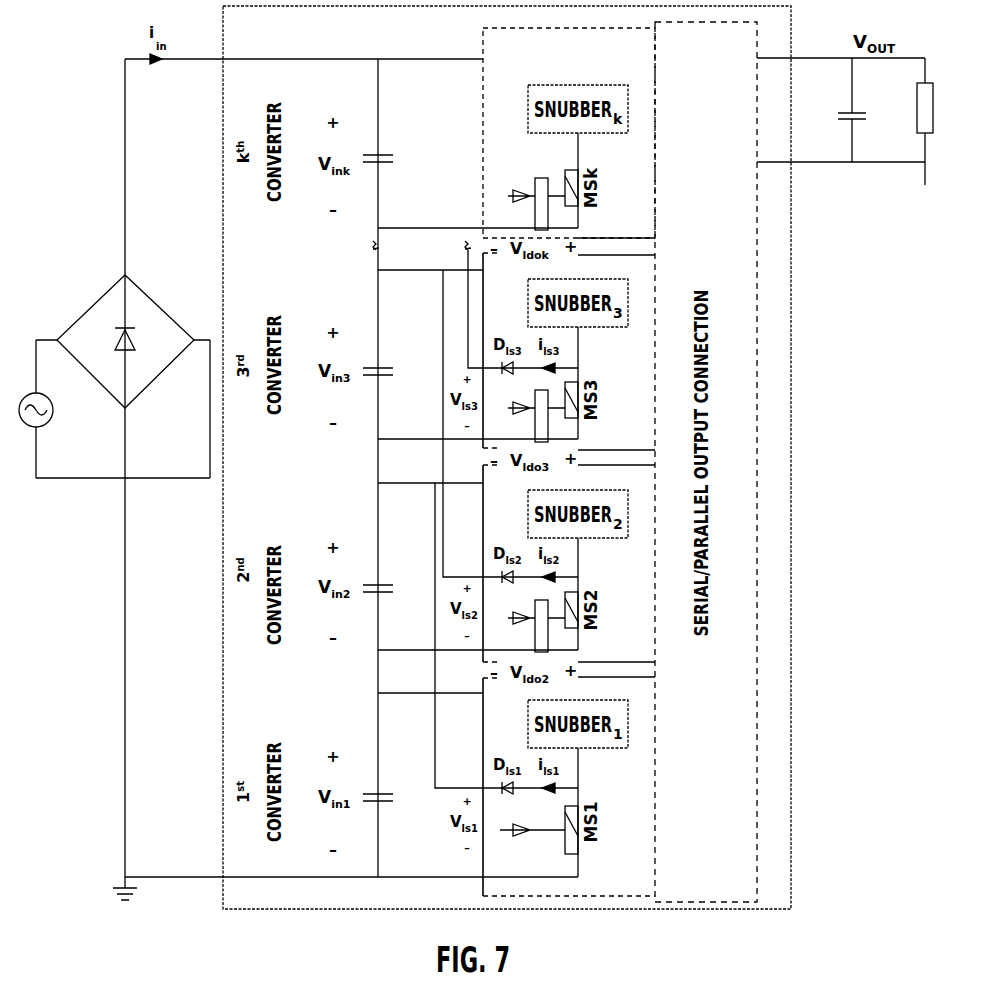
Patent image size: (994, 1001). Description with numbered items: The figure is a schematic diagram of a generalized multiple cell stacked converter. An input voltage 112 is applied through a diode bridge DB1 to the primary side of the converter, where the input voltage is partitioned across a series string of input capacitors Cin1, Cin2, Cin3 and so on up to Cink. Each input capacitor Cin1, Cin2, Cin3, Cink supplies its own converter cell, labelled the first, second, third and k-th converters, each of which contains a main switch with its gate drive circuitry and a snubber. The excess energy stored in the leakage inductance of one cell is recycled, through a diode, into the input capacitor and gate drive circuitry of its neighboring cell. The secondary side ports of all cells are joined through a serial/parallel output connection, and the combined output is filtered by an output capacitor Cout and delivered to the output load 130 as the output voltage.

The input voltage 112 is at (56, 410).
The output load 130 is at (921, 137).
The diode bridge rectifier DB1 is at (125, 339).
The output capacitor Cout is at (832, 110).
The input capacitor Cink is at (395, 166).
The input capacitor Cin3 is at (395, 373).
The input capacitor Cin2 is at (395, 589).
The input capacitor Cin1 is at (395, 799).